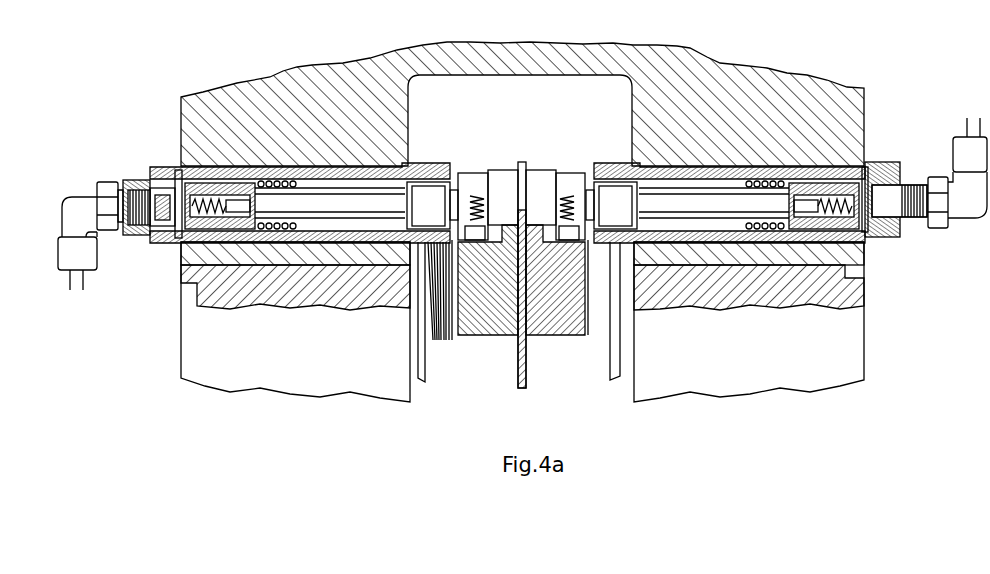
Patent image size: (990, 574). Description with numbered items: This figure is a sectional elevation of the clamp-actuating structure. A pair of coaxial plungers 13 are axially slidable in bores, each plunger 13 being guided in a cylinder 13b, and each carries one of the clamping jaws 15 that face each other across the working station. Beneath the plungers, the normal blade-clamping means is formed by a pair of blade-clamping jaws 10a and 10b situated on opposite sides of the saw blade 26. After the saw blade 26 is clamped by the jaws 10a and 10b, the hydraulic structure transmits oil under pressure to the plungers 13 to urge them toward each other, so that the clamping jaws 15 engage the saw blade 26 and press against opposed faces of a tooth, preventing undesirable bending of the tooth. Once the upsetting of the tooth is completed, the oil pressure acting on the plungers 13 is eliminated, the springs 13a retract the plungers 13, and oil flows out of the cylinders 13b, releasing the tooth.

The blade-clamping jaw 10a is at (490, 323).
The blade-clamping jaw 10b is at (552, 323).
The plunger 13 is at (410, 163).
The spring 13a is at (233, 164).
The cylinder 13b is at (183, 247).
The clamping jaw 15 is at (542, 183).
The saw blade 26 is at (522, 388).